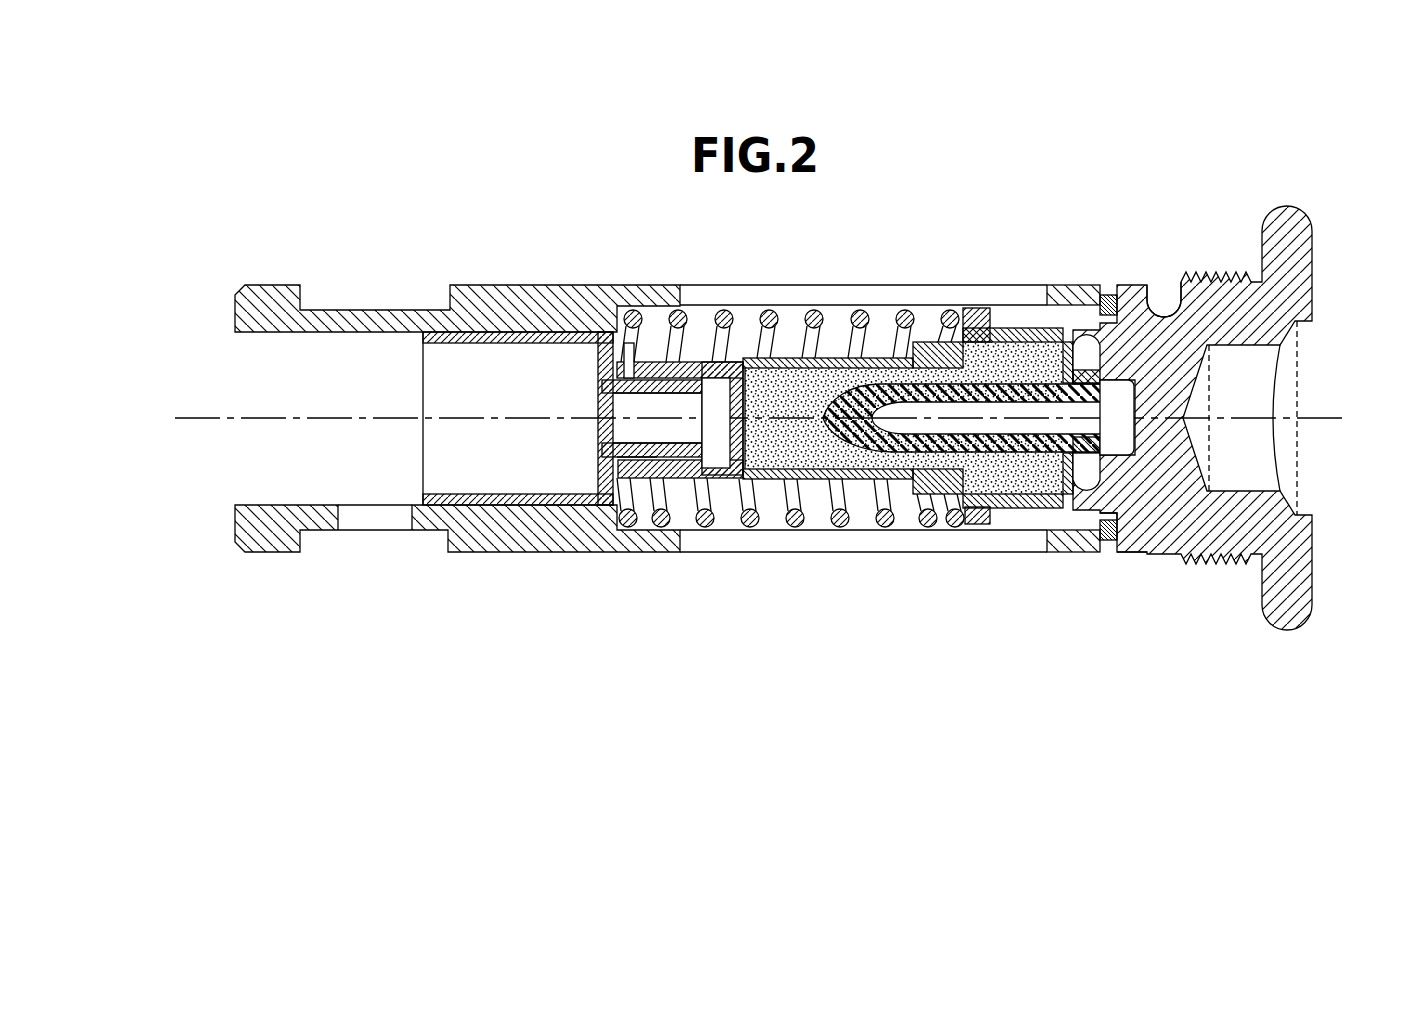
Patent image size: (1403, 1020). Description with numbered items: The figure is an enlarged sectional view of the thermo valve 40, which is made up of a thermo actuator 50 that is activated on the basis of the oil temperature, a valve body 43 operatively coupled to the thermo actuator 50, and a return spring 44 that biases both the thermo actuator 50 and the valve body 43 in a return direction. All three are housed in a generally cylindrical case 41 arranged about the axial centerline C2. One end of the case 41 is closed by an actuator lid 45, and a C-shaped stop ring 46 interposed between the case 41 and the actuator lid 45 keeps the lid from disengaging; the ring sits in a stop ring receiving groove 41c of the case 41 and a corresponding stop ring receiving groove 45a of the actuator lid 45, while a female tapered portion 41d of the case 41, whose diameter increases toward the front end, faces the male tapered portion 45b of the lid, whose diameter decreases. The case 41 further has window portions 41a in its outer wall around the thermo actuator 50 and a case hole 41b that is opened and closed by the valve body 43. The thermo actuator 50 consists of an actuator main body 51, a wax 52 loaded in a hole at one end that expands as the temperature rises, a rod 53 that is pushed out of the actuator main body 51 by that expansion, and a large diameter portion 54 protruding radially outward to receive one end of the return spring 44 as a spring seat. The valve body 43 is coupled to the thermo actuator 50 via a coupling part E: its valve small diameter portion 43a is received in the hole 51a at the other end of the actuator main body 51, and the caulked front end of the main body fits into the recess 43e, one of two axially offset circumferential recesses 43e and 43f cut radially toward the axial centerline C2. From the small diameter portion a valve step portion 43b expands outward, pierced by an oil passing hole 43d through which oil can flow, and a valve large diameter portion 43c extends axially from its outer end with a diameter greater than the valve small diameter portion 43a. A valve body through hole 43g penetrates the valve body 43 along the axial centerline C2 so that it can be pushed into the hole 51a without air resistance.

The thermo valve 40 is at (1291, 157).
The case 41 is at (488, 552).
The window portions 41a is at (1030, 291).
The case hole 41b is at (352, 518).
The stop ring receiving groove 41c is at (1138, 545).
The female tapered portion 41d is at (1178, 300).
The valve body 43 is at (458, 358).
The valve small diameter portion 43a is at (697, 362).
The valve step portion 43b is at (597, 372).
The valve large diameter portion 43c is at (557, 508).
The oil passing hole 43d is at (597, 482).
The recess 43e is at (638, 362).
The recess 43f is at (682, 370).
The valve body through hole 43g is at (615, 430).
The return spring 44 is at (845, 532).
The actuator lid 45 is at (1231, 278).
The stop ring receiving groove 45a is at (1112, 532).
The male tapered portion 45b is at (1072, 518).
The C-shaped stop ring 46 is at (1110, 295).
The thermo actuator 50 is at (1010, 515).
The actuator main body 51 is at (791, 360).
The hole 51a is at (730, 443).
The wax 52 is at (850, 385).
The rod 53 is at (948, 386).
The large diameter portion 54 is at (978, 308).
The coupling part E is at (640, 463).
The axial centerline C2 is at (1339, 414).